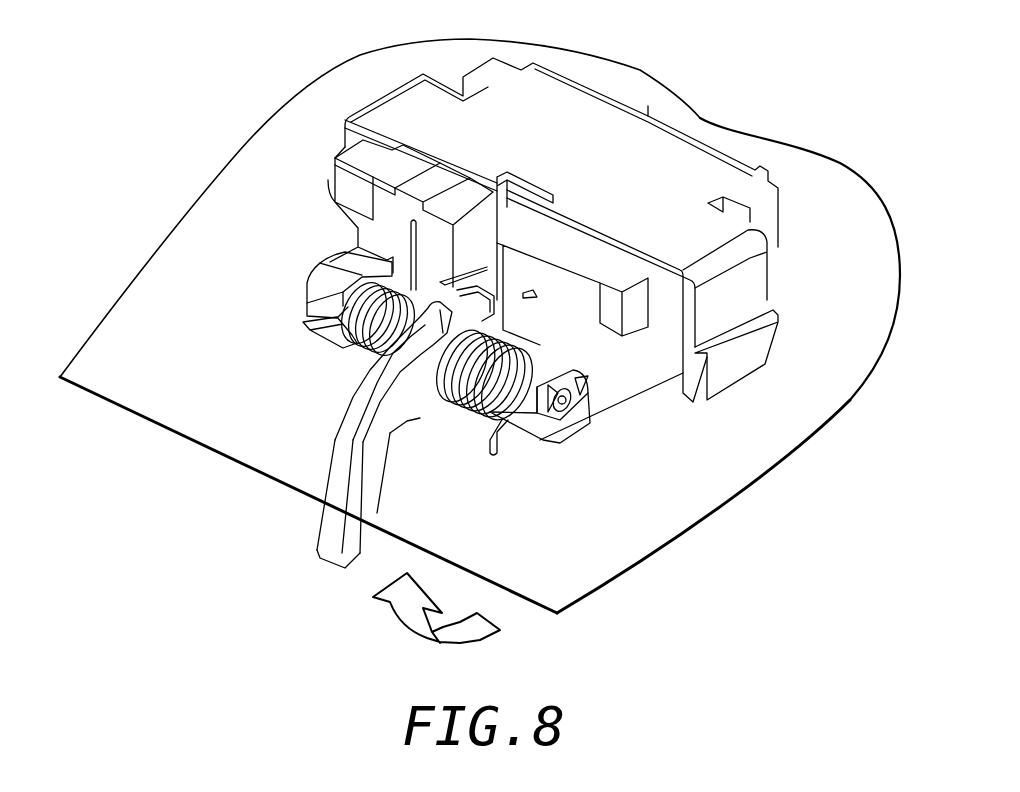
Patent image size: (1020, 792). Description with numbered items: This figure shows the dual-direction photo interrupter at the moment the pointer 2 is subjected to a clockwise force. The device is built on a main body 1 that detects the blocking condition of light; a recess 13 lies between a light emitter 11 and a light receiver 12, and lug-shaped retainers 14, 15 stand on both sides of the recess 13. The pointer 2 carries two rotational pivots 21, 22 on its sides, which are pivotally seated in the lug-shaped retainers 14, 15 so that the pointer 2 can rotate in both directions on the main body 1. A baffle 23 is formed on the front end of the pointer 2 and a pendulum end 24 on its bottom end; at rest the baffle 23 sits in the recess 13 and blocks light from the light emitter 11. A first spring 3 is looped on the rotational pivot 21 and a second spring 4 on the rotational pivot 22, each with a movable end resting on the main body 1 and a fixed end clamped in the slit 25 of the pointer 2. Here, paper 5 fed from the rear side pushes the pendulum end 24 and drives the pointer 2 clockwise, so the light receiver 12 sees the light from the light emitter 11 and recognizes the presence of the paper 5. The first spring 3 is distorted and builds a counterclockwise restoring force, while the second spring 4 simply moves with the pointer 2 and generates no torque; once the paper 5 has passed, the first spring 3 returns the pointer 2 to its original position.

The main body 1 is at (648, 108).
The pointer 2 is at (347, 410).
The first spring 3 is at (360, 350).
The second spring 4 is at (470, 407).
The paper 5 is at (700, 500).
The light emitter 11 is at (470, 272).
The light receiver 12 is at (540, 292).
The recess 13 is at (520, 213).
The lug-shaped retainer 14 is at (318, 292).
The lug-shaped retainer 15 is at (570, 427).
The rotational pivot 21 is at (328, 333).
The rotational pivot 22 is at (473, 357).
The baffle 23 is at (463, 300).
The pendulum end 24 is at (327, 527).
The slit 25 is at (492, 298).